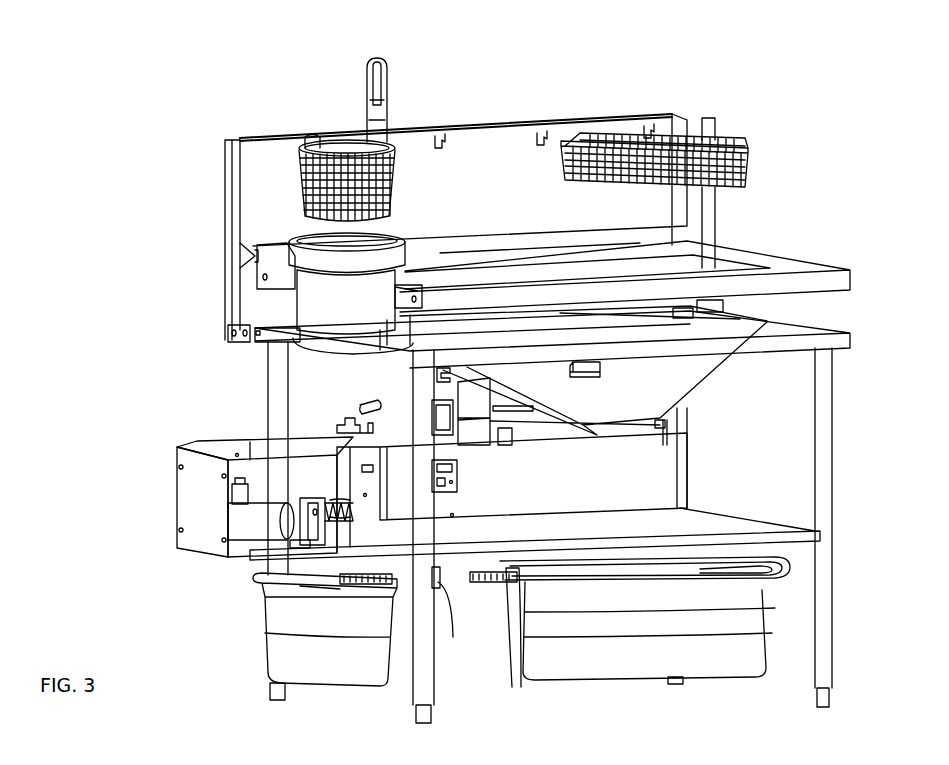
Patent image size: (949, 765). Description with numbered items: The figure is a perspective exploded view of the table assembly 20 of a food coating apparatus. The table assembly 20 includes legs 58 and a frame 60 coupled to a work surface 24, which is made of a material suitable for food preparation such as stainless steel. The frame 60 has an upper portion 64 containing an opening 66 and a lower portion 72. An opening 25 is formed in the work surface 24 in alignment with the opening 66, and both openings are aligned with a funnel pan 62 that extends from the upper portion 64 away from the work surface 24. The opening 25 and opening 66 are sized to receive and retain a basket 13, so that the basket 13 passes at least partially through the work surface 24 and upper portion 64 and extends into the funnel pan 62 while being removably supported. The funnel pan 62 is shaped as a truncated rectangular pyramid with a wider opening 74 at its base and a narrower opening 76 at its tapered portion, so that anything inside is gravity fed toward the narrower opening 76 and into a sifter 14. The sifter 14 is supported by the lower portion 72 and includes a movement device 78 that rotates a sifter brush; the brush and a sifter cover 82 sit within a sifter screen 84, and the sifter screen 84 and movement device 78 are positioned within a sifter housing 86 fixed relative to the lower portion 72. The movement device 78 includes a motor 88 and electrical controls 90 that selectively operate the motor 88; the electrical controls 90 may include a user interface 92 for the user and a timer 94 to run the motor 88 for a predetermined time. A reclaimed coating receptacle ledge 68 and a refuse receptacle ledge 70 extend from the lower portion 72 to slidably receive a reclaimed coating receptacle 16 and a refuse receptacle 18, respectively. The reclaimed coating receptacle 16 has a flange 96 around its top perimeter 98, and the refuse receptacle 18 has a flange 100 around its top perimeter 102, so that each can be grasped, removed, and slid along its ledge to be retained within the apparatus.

The basket 13 is at (688, 140).
The sifter 14 is at (228, 498).
The reclaimed coating receptacle 16 is at (687, 640).
The refuse receptacle 18 is at (334, 650).
The table assembly 20 is at (868, 248).
The work surface 24 is at (622, 249).
The opening 25 is at (722, 262).
The legs 58 is at (680, 417).
The frame 60 is at (268, 337).
The funnel pan 62 is at (678, 390).
The upper portion 64 is at (571, 329).
The opening 66 is at (742, 317).
The reclaimed coating receptacle ledge 68 is at (519, 640).
The refuse receptacle ledge 70 is at (474, 616).
The lower portion 72 is at (710, 527).
The wider opening 74 is at (718, 361).
The narrower opening 76 is at (662, 422).
The movement device 78 is at (263, 523).
The sifter cover 82 is at (448, 418).
The sifter screen 84 is at (377, 440).
The sifter housing 86 is at (537, 492).
The motor 88 is at (267, 503).
The electrical controls 90 is at (372, 410).
The user interface 92 is at (457, 472).
The timer 94 is at (438, 423).
The flange 96 is at (777, 557).
The top perimeter 98 is at (727, 571).
The flange 100 is at (336, 591).
The top perimeter 102 is at (360, 585).